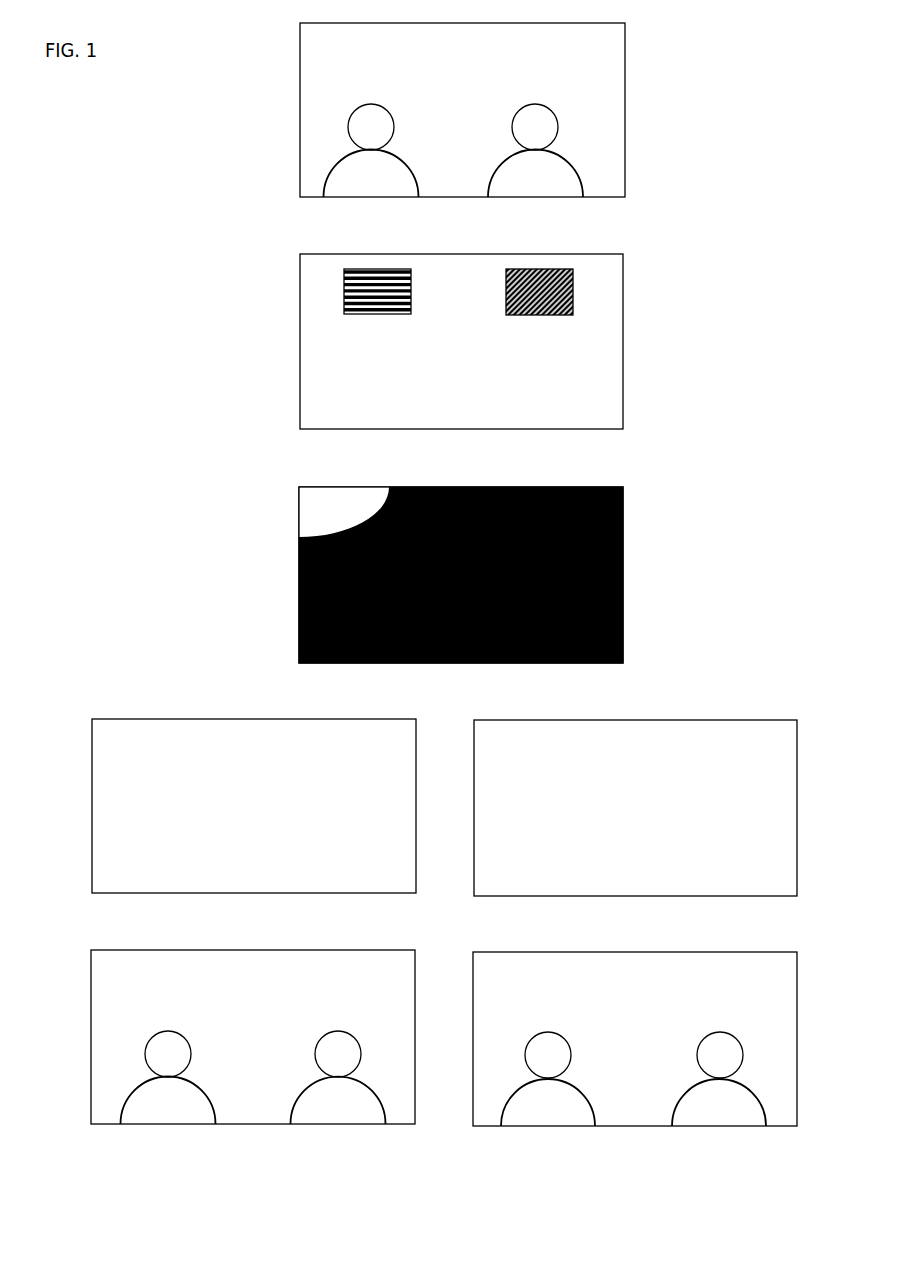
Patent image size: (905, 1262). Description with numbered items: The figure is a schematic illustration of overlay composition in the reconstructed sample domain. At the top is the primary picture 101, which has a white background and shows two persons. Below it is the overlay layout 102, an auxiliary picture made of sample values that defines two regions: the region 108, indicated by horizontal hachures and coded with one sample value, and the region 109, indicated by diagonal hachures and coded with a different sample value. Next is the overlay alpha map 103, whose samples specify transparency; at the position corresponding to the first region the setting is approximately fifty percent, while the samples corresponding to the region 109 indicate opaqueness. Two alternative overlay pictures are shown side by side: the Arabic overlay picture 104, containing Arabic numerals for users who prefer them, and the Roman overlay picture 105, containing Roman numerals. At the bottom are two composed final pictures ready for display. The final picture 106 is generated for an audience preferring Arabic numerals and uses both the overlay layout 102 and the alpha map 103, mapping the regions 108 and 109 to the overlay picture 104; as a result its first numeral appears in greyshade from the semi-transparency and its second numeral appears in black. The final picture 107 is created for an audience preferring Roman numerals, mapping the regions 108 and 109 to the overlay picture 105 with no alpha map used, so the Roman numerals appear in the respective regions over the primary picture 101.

The primary picture 101 is at (300, 110).
The overlay layout 102 is at (300, 343).
The overlay alpha map 103 is at (299, 576).
The Arabic overlay picture 104 is at (92, 807).
The Roman overlay picture 105 is at (797, 810).
The final picture 106 is at (91, 1038).
The final picture 107 is at (797, 1040).
The region 108 is at (344, 290).
The region 109 is at (573, 291).